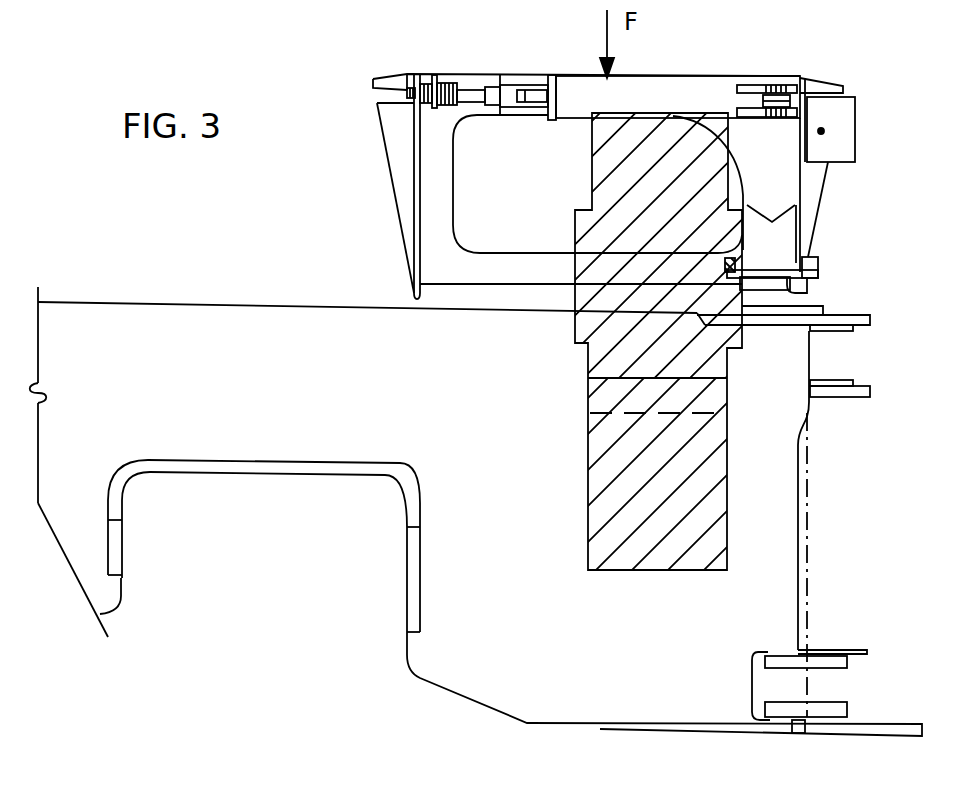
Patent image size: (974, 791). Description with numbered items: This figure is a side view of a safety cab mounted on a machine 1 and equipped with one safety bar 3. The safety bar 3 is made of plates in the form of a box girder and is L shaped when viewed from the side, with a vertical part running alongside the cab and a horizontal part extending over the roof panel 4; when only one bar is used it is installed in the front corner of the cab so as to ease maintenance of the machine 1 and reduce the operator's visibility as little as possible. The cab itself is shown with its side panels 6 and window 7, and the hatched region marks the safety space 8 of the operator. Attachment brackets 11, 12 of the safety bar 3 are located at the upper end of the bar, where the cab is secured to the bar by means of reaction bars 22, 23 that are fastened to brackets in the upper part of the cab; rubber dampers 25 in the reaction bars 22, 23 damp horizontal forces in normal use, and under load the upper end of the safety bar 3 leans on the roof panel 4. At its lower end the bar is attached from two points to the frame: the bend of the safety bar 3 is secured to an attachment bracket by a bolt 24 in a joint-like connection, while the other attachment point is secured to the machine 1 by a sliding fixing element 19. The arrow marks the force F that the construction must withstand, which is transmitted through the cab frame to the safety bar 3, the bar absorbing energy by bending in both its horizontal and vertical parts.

The machine 1 is at (113, 244).
The safety bar 3 is at (782, 178).
The roof panel 4 is at (823, 83).
The side panels 6 is at (410, 240).
The window 7 is at (497, 120).
The safety space 8 is at (602, 441).
The attachment bracket 11 is at (513, 76).
The attachment bracket 12 is at (754, 85).
The fixing element 19 is at (807, 303).
The reaction bar 22 is at (492, 88).
The reaction bar 23 is at (737, 96).
The bolt 24 is at (822, 265).
The rubber dampers 25 is at (420, 76).